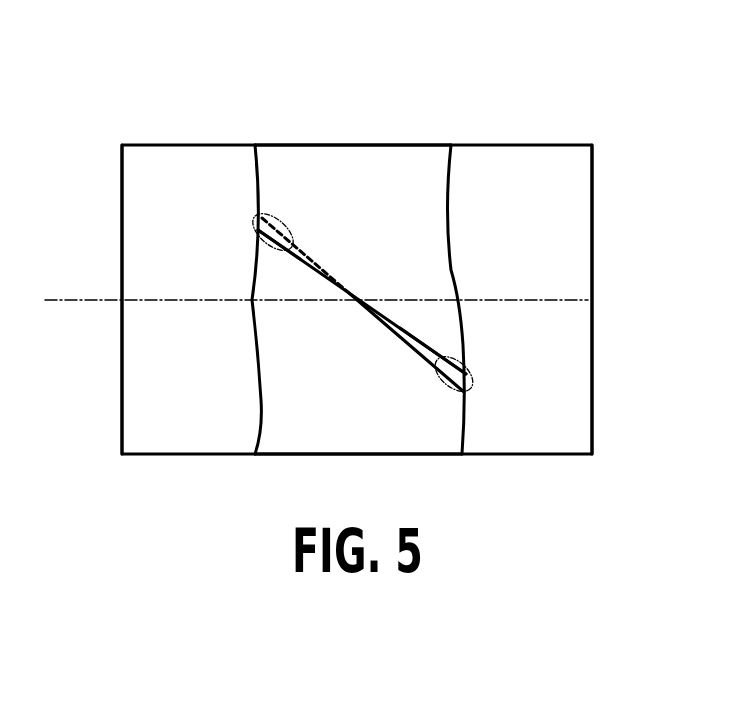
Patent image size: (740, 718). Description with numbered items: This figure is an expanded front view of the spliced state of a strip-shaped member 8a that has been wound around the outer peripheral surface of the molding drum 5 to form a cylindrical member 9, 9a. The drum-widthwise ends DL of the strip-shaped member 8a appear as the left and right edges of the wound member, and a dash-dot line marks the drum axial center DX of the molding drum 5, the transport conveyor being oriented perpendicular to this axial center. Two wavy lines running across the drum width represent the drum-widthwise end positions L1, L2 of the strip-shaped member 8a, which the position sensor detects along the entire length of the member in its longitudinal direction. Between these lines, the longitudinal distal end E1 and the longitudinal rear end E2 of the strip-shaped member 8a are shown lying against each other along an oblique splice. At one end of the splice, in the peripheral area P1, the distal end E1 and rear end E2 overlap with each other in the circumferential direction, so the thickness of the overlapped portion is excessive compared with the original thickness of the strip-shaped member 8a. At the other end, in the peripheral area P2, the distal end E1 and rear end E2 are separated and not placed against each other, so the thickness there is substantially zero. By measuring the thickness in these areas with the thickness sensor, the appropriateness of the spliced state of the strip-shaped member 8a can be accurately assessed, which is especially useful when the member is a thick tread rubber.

The molding drum 5 is at (192, 160).
The cylindrical member 9 is at (362, 205).
The cylindrical member 9a is at (370, 147).
The strip-shaped member 8a is at (443, 193).
The drum-widthwise ends DL is at (121, 228).
The drum axial center DX is at (72, 300).
The drum-widthwise end position L1 is at (250, 318).
The drum-widthwise end position L2 is at (464, 338).
The peripheral area P1 is at (287, 218).
The peripheral area P2 is at (448, 387).
The longitudinal distal end E1 is at (421, 353).
The longitudinal rear end E2 is at (289, 255).